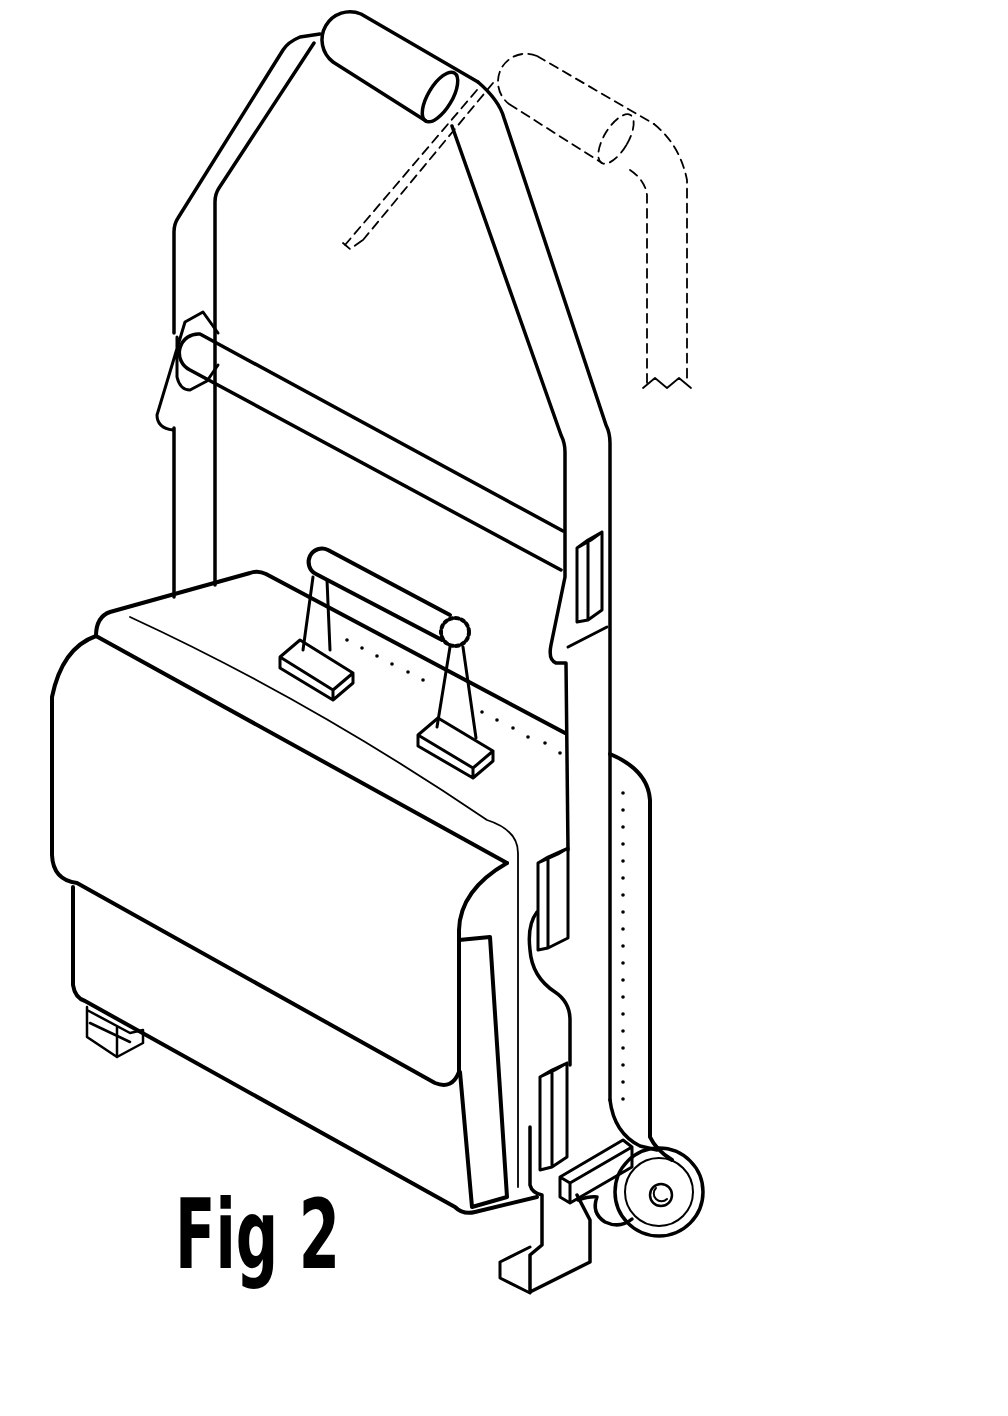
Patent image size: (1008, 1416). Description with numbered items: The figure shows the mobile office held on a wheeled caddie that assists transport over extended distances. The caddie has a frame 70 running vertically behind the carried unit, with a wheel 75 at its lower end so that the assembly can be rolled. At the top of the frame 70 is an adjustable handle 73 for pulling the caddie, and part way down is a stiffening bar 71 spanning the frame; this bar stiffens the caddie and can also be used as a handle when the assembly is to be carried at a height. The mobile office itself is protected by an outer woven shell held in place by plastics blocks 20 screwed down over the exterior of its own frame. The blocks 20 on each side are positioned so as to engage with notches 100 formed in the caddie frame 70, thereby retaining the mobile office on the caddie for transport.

The plastics blocks 20 is at (618, 530).
The frame 70 is at (580, 1027).
The stiffening bar 71 is at (397, 428).
The adjustable handle 73 is at (443, 40).
The wheels 75 is at (692, 1150).
The notches 100 is at (563, 945).